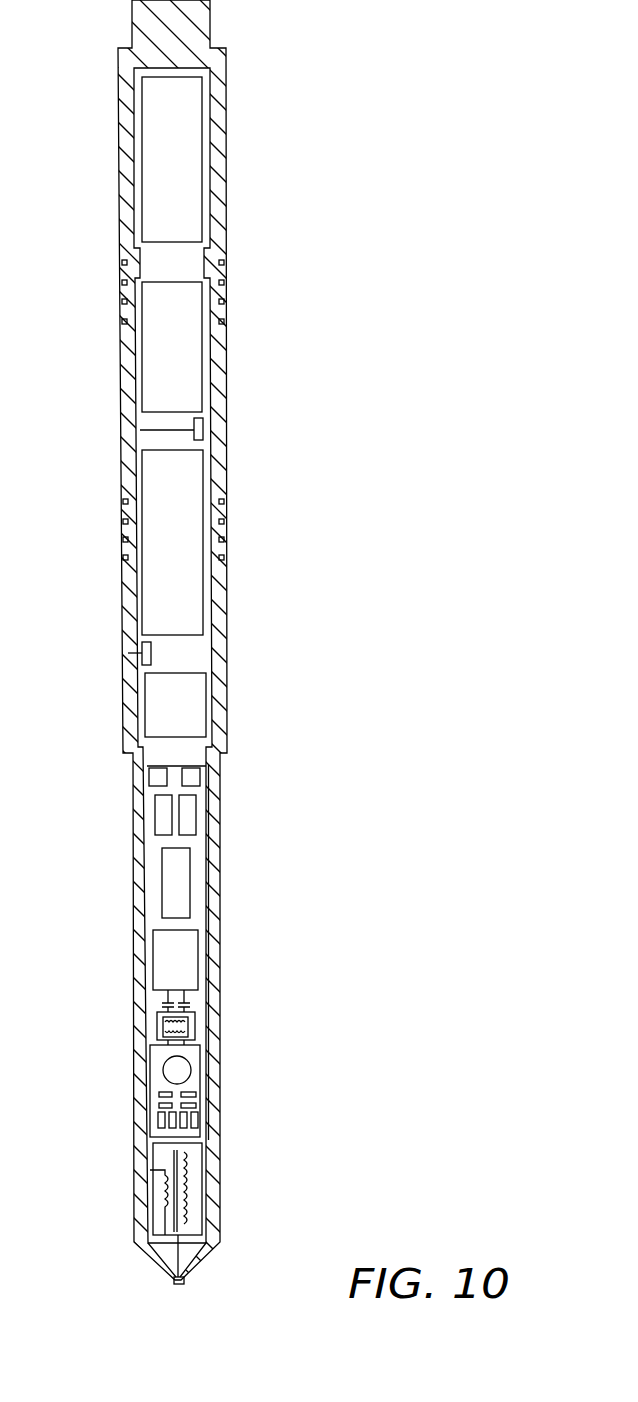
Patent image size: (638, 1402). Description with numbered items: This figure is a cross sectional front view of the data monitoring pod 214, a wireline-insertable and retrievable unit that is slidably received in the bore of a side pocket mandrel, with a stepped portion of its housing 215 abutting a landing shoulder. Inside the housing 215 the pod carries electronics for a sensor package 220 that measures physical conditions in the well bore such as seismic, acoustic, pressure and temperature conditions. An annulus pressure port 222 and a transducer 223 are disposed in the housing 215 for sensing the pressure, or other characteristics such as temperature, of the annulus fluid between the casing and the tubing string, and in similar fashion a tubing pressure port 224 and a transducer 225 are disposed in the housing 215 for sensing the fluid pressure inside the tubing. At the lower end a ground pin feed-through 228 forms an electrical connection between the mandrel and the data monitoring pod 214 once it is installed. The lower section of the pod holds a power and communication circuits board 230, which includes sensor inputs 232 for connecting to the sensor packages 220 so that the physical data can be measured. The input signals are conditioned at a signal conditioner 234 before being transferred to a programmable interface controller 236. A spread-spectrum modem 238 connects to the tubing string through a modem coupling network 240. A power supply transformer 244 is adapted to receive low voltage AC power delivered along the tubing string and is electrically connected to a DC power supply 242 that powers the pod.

The data monitoring pod 214 is at (319, 665).
The housing 215 is at (226, 582).
The sensor package 220 is at (158, 159).
The annulus pressure port 222 is at (203, 425).
The transducer 223 is at (140, 430).
The tubing pressure port 224 is at (128, 653).
The transducer 225 is at (152, 650).
The ground pin feed-through 228 is at (178, 1285).
The power and communication circuits board 230 is at (146, 894).
The sensor inputs 232 is at (149, 776).
The signal conditioner 234 is at (185, 816).
The programmable interface controller 236 is at (178, 888).
The spread-spectrum modem 238 is at (182, 960).
The modem coupling network 240 is at (198, 1025).
The DC power supply 242 is at (190, 1052).
The power supply transformer 244 is at (202, 1193).